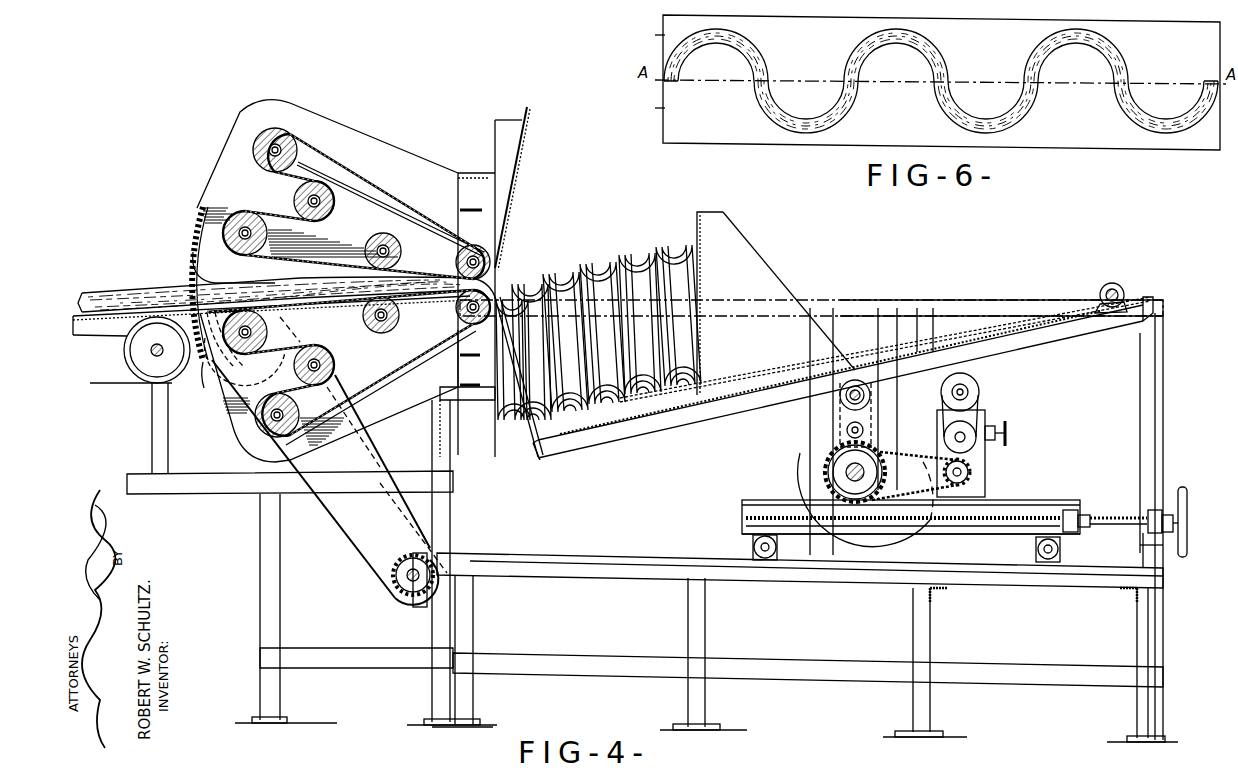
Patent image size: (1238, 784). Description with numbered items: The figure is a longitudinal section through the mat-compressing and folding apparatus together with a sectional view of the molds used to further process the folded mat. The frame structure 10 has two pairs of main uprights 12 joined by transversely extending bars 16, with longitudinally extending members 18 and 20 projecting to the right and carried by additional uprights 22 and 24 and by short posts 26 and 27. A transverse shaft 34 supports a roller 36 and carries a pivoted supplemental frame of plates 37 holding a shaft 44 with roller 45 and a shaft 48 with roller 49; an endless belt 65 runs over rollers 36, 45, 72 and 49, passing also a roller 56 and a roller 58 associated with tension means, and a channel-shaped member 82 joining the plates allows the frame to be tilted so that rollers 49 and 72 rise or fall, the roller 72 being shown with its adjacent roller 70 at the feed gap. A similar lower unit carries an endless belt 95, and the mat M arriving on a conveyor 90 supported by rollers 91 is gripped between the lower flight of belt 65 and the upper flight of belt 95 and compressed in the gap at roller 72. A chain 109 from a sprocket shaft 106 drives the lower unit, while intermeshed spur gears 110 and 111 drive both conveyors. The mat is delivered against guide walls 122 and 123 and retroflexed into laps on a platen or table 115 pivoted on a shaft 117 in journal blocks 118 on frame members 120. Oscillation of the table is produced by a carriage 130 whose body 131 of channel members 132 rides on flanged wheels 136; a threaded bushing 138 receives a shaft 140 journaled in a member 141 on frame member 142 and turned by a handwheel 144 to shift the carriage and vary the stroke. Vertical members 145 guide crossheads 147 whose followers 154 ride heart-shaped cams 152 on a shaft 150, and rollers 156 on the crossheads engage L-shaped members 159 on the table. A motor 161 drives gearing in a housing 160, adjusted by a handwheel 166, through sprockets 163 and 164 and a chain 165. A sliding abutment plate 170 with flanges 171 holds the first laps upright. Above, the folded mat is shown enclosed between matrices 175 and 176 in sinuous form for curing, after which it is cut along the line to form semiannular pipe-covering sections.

In FIG. 6, the mat M is at (912, 44).
In FIG. 4, the mat M is at (144, 290).
In FIG. 6, the matrix 175 is at (637, 36).
In FIG. 6, the matrix 176 is at (637, 108).
In FIG. 4, the frame structure 10 is at (1165, 400).
In FIG. 4, the posts or uprights 12 is at (455, 522).
In FIG. 4, the transversely extending bars 16 is at (416, 482).
In FIG. 4, the longitudinally extending member 18 is at (600, 575).
In FIG. 4, the longitudinally extending member 20 is at (645, 658).
In FIG. 4, the uprights or posts 22 is at (932, 625).
In FIG. 4, the uprights or posts 24 is at (1137, 625).
In FIG. 4, the short posts 26 is at (473, 620).
In FIG. 4, the short posts 27 is at (706, 606).
In FIG. 4, the shaft 34 is at (280, 232).
In FIG. 4, the roller 36 is at (250, 212).
In FIG. 4, the plate 37 is at (362, 146).
In FIG. 4, the shaft 44 is at (296, 146).
In FIG. 4, the roller 45 is at (285, 156).
In FIG. 4, the shaft 48 is at (398, 252).
In FIG. 4, the roller 49 is at (385, 233).
In FIG. 4, the roller 56 is at (334, 203).
In FIG. 4, the roller 58 is at (305, 195).
In FIG. 4, the endless belt 65 is at (372, 188).
In FIG. 4, the feed roller 70 is at (458, 264).
In FIG. 4, the roller 72 is at (486, 258).
In FIG. 4, the channel-shaped member 82 is at (470, 174).
In FIG. 4, the conveyor 90 is at (108, 322).
In FIG. 4, the roller 91 is at (133, 362).
In FIG. 4, the endless belt 95 is at (386, 418).
In FIG. 4, the shaft 106 is at (395, 593).
In FIG. 4, the chain 109 is at (341, 540).
In FIG. 4, the spur gear 110 is at (200, 213).
In FIG. 4, the spur gear 111 is at (201, 372).
In FIG. 4, the platen or table 115 is at (664, 420).
In FIG. 4, the shaft 117 is at (1107, 285).
In FIG. 4, the journal blocks 118 is at (1100, 296).
In FIG. 4, the longitudinally extending members 120 is at (1118, 330).
In FIG. 4, the abutment wall 122 is at (520, 452).
In FIG. 4, the abutment wall 123 is at (523, 138).
In FIG. 4, the carriage 130 is at (1005, 501).
In FIG. 4, the base or body 131 is at (795, 456).
In FIG. 4, the channel-shaped member 132 is at (742, 510).
In FIG. 4, the flanged wheels 136 is at (750, 546).
In FIG. 4, the threaded bushing 138 is at (1092, 517).
In FIG. 4, the shaft 140 is at (1010, 535).
In FIG. 4, the member 141 is at (1175, 530).
In FIG. 4, the transversely extending frame member 142 is at (1160, 555).
In FIG. 4, the handwheel 144 is at (1194, 505).
In FIG. 4, the vertically disposed member 145 is at (890, 310).
In FIG. 4, the crosshead or plate 147 is at (846, 430).
In FIG. 4, the shaft 150 is at (845, 472).
In FIG. 4, the cam 152 is at (826, 462).
In FIG. 4, the cam follower or roller 154 is at (843, 445).
In FIG. 4, the roller 156 is at (840, 398).
In FIG. 4, the L-shaped member 159 is at (1022, 338).
In FIG. 4, the housing 160 is at (988, 462).
In FIG. 4, the motor 161 is at (982, 389).
In FIG. 4, the sprocket 163 is at (972, 473).
In FIG. 4, the sprocket 164 is at (840, 490).
In FIG. 4, the driving chain 165 is at (838, 492).
In FIG. 4, the handwheel 166 is at (1007, 428).
In FIG. 4, the abutment plate 170 is at (688, 213).
In FIG. 4, the flanges 171 is at (790, 270).